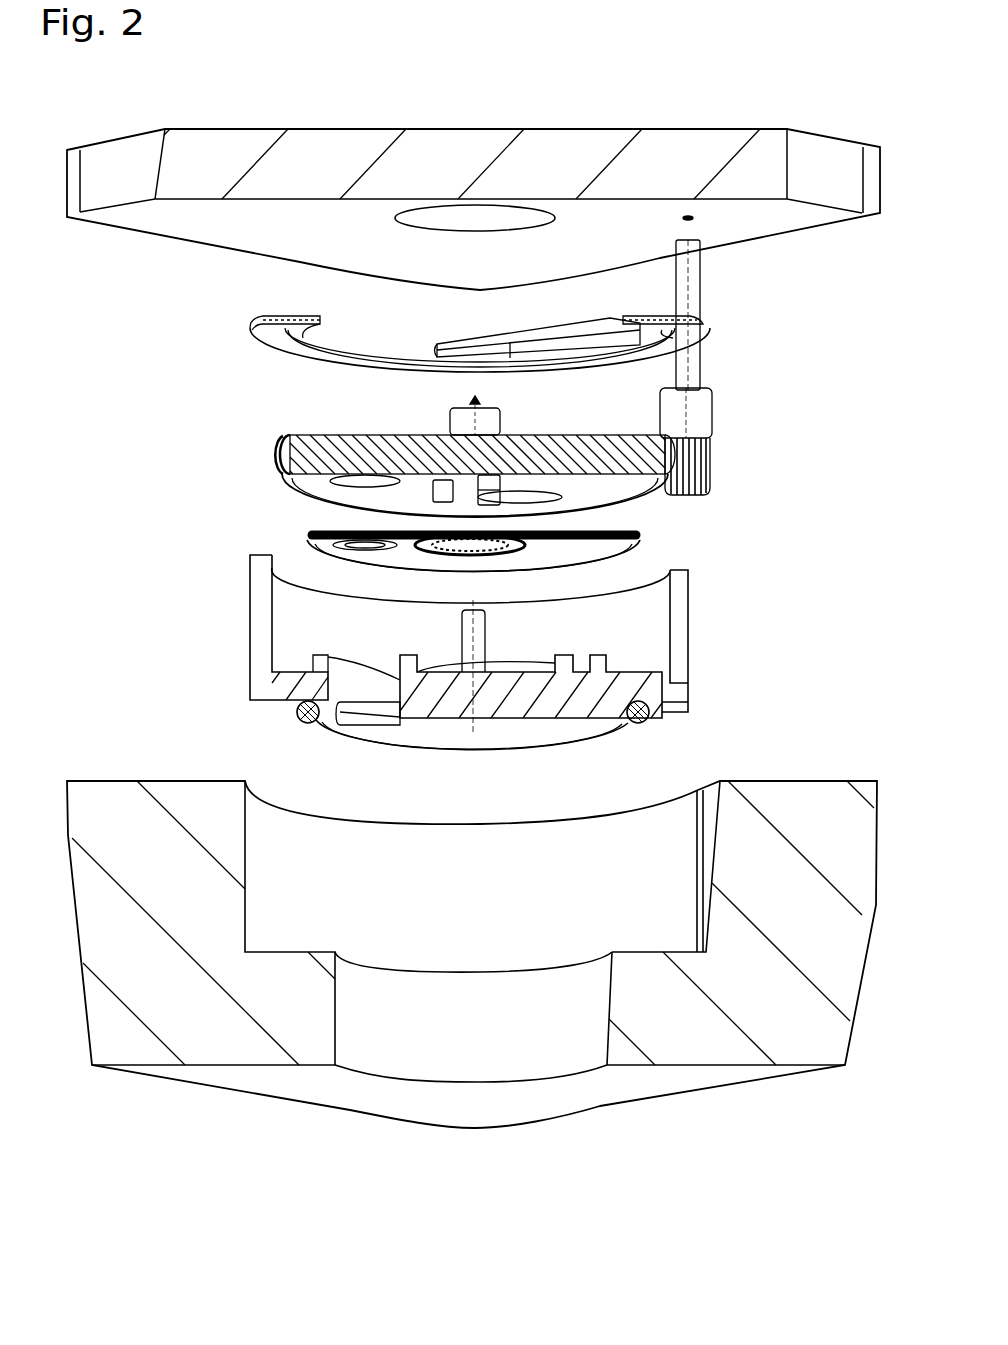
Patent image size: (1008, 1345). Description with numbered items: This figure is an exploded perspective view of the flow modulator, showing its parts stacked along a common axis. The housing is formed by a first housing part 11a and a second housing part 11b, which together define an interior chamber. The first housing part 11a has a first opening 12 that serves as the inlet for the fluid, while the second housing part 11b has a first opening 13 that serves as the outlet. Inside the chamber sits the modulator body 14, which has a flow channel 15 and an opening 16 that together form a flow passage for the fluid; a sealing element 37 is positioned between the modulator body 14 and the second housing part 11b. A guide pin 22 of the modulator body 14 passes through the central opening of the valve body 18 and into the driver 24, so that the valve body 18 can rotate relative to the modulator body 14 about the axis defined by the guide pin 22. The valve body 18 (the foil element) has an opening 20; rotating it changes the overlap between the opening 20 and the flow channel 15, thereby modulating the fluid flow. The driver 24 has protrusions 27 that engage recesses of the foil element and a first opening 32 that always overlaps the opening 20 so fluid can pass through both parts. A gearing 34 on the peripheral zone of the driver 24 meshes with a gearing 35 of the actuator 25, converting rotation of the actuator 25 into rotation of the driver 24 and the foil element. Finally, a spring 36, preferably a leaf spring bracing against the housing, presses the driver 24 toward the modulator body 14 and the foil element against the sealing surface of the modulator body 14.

The first housing part 11a is at (683, 153).
The second housing part 11b is at (800, 1030).
The first opening 12 is at (468, 235).
The first opening 13 is at (420, 1040).
The modulator body 14 is at (714, 668).
The flow channel 15 is at (582, 640).
The opening 16 is at (345, 730).
The valve body 18 is at (656, 546).
The opening 20 is at (353, 548).
The guide pin 22 is at (460, 620).
The driver 24 is at (248, 462).
The actuator 25 is at (708, 291).
The protrusions 27 is at (442, 480).
The first opening 32 is at (362, 486).
The gearing 34 is at (284, 442).
The gearing 35 is at (712, 471).
The spring 36 is at (238, 334).
The sealing element 37 is at (641, 726).